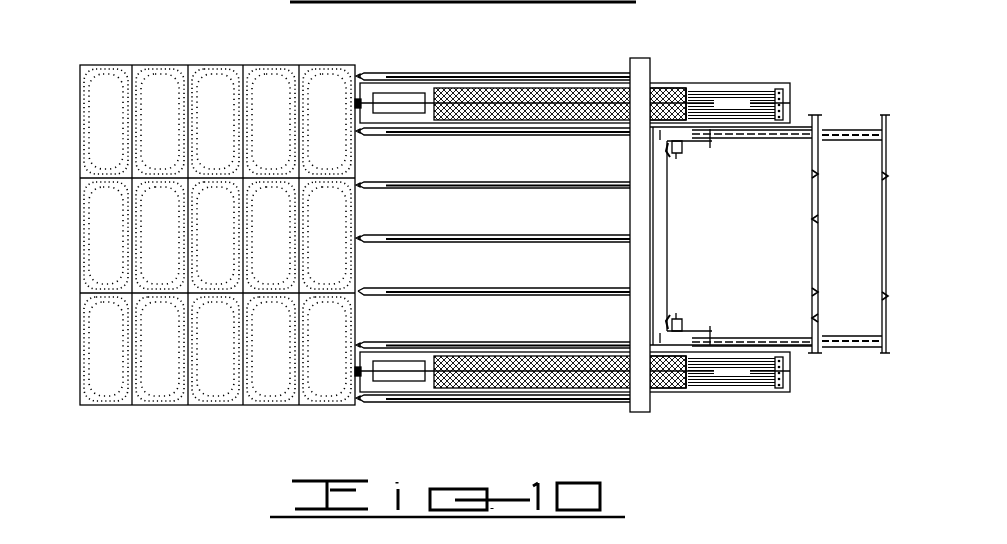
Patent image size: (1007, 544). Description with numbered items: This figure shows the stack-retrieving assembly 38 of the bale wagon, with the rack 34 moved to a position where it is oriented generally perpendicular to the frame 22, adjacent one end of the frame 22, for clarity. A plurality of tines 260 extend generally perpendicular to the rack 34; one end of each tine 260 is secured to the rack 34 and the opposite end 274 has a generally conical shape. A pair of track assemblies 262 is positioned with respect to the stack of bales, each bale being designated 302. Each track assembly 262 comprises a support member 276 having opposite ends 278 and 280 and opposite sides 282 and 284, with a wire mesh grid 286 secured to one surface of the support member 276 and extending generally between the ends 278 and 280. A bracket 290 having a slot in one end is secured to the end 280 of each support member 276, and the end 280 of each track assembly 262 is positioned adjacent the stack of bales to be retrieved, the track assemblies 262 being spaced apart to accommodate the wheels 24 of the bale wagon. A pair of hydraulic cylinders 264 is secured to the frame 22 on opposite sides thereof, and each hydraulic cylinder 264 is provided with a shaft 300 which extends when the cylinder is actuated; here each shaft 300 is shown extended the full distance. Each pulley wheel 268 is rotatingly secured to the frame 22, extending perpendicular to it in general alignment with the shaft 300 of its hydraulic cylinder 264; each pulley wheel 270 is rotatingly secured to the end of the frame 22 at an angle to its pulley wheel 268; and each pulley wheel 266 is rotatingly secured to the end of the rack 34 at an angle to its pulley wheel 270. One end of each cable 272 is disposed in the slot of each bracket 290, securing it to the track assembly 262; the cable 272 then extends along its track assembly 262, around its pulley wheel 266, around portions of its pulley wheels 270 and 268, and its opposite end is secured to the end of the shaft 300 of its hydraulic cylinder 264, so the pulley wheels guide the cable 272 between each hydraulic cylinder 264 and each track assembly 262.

The frame 22 is at (660, 270).
The wheels 24 is at (758, 94).
The rack 34 is at (642, 238).
The stack-retrieving assembly 38 is at (752, 62).
The tines 260 is at (480, 74).
The track assemblies 262 is at (544, 90).
The hydraulic cylinders 264 is at (828, 142).
The pulley wheels 266 is at (672, 92).
The pulley wheels 268 is at (684, 150).
The pulley wheels 270 is at (678, 160).
The cable 272 is at (400, 103).
The opposite end of tine 274 is at (362, 145).
The support member 276 is at (788, 114).
The end of support member 278 is at (790, 95).
The end of support member 280 is at (355, 70).
The side of support member 282 is at (580, 124).
The side of support member 284 is at (664, 84).
The wire mesh grid 286 is at (578, 92).
The bracket 290 is at (354, 106).
The shaft 300 is at (766, 138).
The bales 302 is at (230, 64).